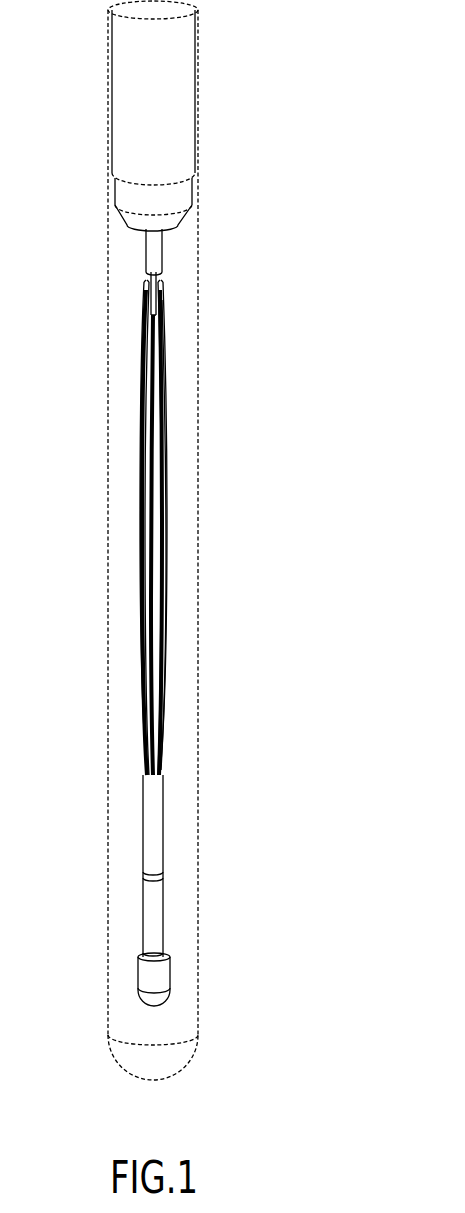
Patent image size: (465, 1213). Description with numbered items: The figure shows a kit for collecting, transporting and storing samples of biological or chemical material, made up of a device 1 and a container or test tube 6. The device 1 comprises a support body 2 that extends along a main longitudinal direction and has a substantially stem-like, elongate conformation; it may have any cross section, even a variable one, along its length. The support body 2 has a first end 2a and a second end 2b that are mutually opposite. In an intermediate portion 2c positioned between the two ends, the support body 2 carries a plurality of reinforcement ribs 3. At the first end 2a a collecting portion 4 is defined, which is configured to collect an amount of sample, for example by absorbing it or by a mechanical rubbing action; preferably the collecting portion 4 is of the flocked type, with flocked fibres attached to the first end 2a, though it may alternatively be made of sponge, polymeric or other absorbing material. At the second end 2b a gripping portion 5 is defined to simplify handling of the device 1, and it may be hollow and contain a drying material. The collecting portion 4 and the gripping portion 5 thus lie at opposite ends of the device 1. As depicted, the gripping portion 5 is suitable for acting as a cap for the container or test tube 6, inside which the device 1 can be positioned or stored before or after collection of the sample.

The device 1 is at (168, 709).
The support body 2 is at (172, 593).
The first end 2a is at (152, 953).
The second end 2b is at (152, 232).
The intermediate portion 2c is at (160, 500).
The reinforcement ribs 3 is at (142, 562).
The collecting portion 4 is at (157, 975).
The gripping portion 5 is at (145, 96).
The container or test tube 6 is at (198, 572).